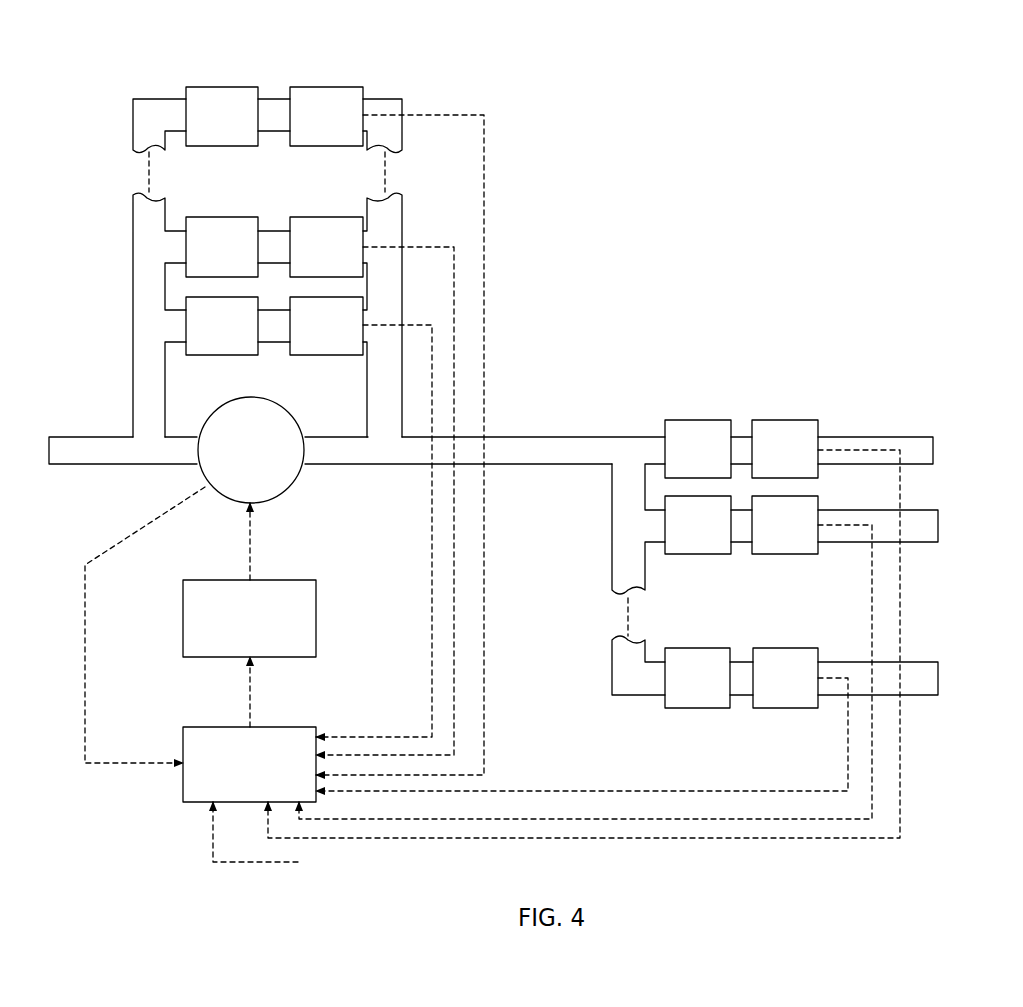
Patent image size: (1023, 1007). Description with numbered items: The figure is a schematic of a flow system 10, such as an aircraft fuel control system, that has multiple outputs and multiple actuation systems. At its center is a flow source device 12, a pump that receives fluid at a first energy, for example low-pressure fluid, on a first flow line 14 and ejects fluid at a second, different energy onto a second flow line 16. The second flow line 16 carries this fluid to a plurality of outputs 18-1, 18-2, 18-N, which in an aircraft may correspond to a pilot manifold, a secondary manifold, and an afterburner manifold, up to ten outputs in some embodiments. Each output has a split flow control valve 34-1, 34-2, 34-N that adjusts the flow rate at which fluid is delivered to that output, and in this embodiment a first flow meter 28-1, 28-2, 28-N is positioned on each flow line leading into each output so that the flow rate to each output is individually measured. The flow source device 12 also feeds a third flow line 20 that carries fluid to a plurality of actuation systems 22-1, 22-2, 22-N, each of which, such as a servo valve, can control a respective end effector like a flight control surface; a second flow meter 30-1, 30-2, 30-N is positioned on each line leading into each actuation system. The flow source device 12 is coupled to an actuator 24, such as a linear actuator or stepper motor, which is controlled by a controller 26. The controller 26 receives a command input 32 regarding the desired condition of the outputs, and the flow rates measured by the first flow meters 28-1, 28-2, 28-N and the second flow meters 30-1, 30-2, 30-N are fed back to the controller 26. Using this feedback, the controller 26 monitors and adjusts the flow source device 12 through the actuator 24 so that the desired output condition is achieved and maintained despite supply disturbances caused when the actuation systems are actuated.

The flow system 10 is at (790, 206).
The flow source device 12 is at (268, 477).
The first flow line 14 is at (92, 452).
The second flow line 16 is at (550, 452).
The output 18-1 is at (926, 450).
The output 18-2 is at (927, 525).
The output 18-N is at (925, 680).
The third flow line 20 is at (380, 422).
The actuation system 22-1 is at (223, 327).
The actuation system 22-2 is at (222, 247).
The actuation system 22-N is at (222, 115).
The actuator 24 is at (215, 600).
The controller 26 is at (222, 757).
The first flow meter 28-1 is at (783, 457).
The first flow meter 28-2 is at (785, 523).
The first flow meter 28-N is at (785, 678).
The second flow meter 30-1 is at (328, 327).
The second flow meter 30-2 is at (325, 247).
The second flow meter 30-N is at (325, 115).
The command input 32 is at (271, 840).
The split flow control valve 34-1 is at (695, 452).
The split flow control valve 34-2 is at (697, 525).
The split flow control valve 34-N is at (697, 678).